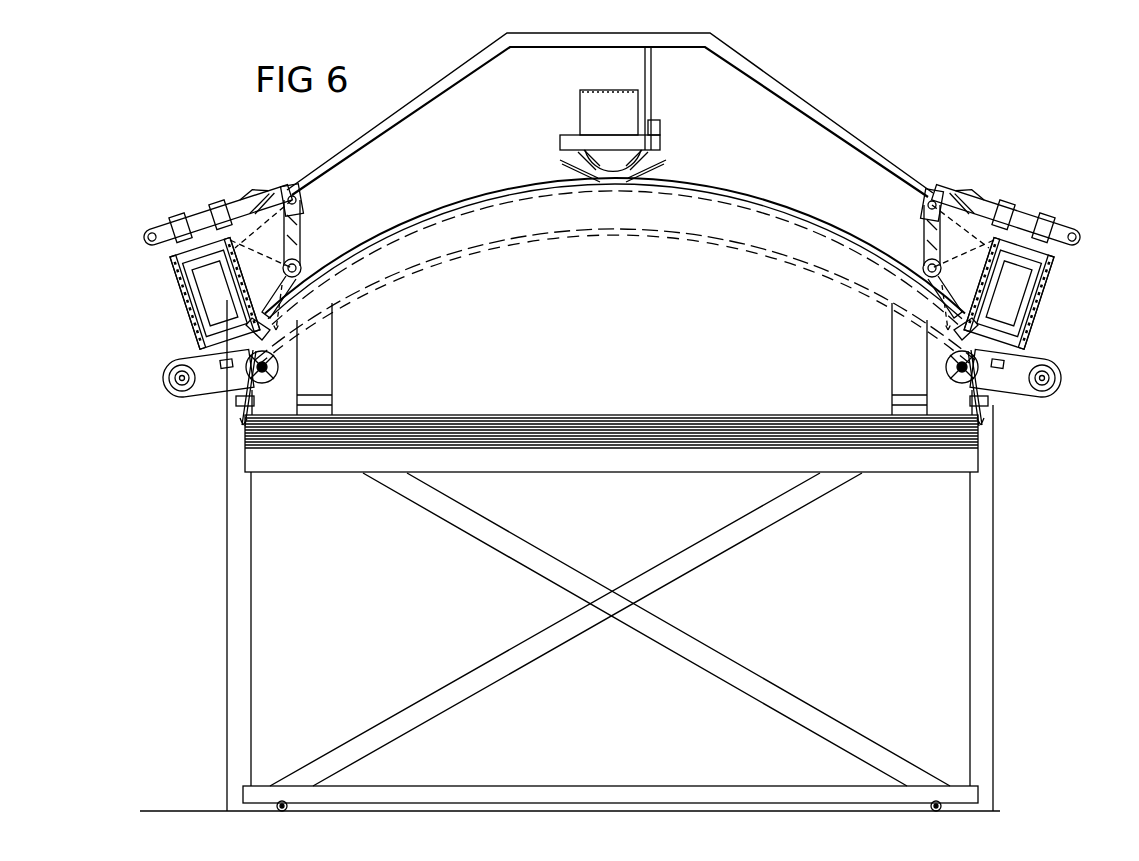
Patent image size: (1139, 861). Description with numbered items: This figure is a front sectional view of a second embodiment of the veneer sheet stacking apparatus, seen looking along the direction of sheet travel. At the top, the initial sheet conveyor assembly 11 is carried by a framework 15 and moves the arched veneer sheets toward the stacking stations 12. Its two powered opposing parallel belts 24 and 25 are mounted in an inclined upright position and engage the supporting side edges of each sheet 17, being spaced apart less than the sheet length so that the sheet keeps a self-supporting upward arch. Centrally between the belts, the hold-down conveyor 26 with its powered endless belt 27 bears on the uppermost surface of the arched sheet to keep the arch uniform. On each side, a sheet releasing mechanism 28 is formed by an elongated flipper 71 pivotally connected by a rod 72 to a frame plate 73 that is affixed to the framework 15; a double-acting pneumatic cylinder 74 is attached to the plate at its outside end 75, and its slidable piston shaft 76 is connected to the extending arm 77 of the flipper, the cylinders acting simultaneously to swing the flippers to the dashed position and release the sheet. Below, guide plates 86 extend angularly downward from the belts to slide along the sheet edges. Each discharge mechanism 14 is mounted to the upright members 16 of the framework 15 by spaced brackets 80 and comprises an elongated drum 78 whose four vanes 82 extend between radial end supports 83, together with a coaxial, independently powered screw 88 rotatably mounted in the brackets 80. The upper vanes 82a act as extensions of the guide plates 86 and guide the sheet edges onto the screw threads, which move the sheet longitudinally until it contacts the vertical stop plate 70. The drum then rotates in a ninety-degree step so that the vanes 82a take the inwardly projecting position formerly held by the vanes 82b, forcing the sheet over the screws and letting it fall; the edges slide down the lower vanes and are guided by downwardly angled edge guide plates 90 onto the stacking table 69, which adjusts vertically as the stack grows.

The initial sheet conveyor assembly 11 is at (158, 261).
The stacking station 12 is at (368, 196).
The discharge mechanism 14 is at (152, 384).
The framework 15 is at (202, 293).
The upright member 16 is at (227, 512).
The sheet 17 is at (680, 182).
The belt 24 is at (190, 310).
The belt 25 is at (1030, 312).
The hold-down conveyor 26 is at (655, 97).
The endless belt 27 is at (605, 90).
The sheet releasing mechanism 28 is at (222, 205).
The stacking table 69 is at (745, 535).
The vertical stop plate 70 is at (332, 325).
The flipper 71 is at (285, 278).
The rod 72 is at (298, 225).
The frame plate 73 is at (250, 208).
The double-acting pneumatic cylinder 74 is at (182, 220).
The outside end 75 is at (145, 235).
The piston shaft 76 is at (270, 200).
The extending arm 77 is at (300, 196).
The drum 78 is at (288, 374).
The bracket 80 is at (200, 365).
The vane 82 is at (258, 380).
The upper vane 82a is at (932, 362).
The inwardly projecting vane 82b is at (298, 362).
The radial end support 83 is at (238, 400).
The guide plate 86 is at (248, 330).
The screw 88 is at (975, 365).
The edge guide plate 90 is at (240, 405).